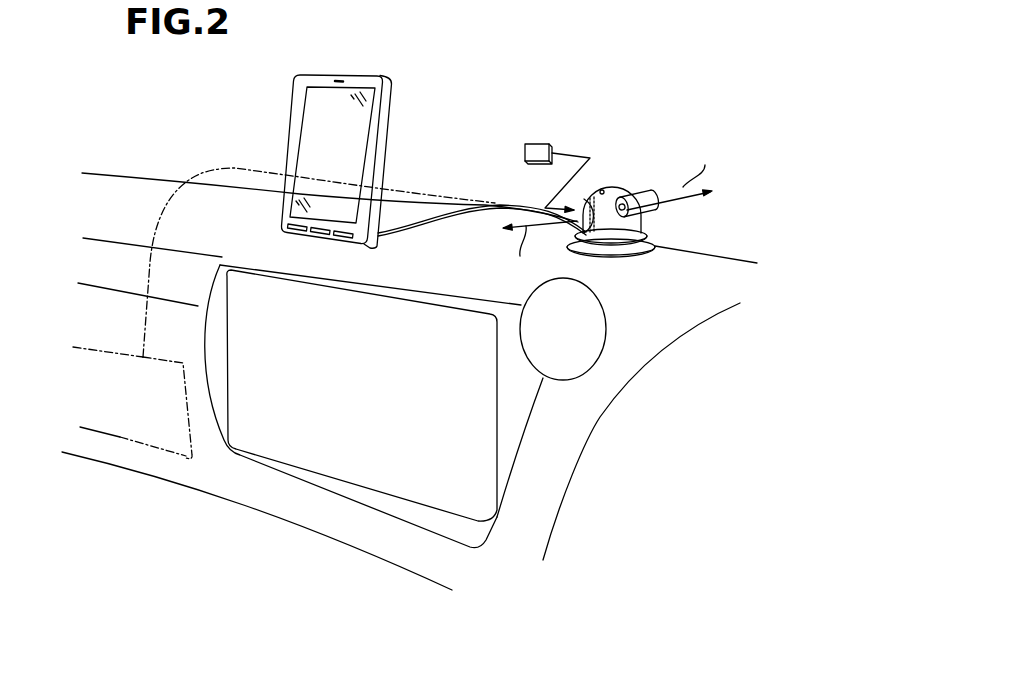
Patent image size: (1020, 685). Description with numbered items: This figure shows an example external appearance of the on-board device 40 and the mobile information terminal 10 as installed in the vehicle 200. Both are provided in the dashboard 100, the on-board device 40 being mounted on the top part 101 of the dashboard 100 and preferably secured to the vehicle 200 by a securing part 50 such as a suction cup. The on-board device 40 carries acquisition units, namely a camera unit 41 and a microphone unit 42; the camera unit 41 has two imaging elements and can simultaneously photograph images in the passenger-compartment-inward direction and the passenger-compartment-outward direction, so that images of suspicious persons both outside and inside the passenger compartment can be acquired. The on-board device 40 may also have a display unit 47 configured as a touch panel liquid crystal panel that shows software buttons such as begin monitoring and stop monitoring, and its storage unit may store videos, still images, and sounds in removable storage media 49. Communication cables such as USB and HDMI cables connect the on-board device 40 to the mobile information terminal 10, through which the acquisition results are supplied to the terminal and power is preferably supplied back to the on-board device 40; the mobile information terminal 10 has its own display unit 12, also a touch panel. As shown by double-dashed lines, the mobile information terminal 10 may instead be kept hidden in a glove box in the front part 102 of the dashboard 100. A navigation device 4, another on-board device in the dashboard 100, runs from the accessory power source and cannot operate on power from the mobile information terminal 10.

The navigation device 4 is at (245, 307).
The mobile information terminal 10 is at (364, 291).
The display unit 12 is at (308, 120).
The on-board device 40 is at (631, 207).
The camera unit 41 is at (640, 192).
The microphone unit 42 is at (601, 189).
The display unit 47 is at (595, 235).
The storage media 49 is at (538, 145).
The securing part 50 is at (643, 259).
The dashboard 100 is at (750, 237).
The top part 101 is at (123, 207).
The front part 102 is at (107, 445).
The vehicle 200 is at (621, 53).